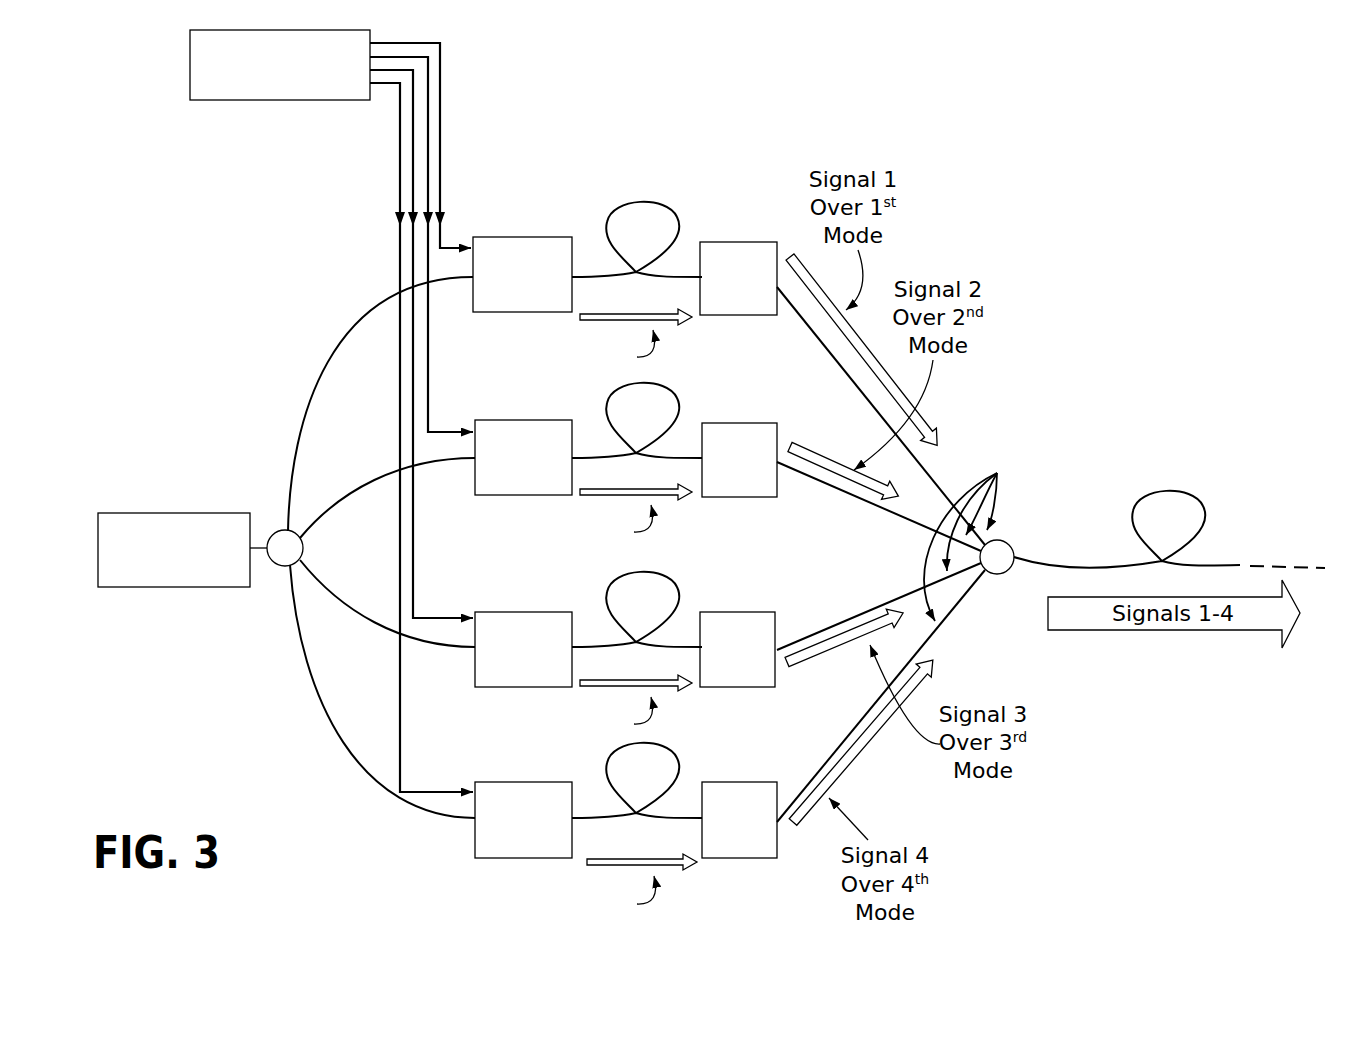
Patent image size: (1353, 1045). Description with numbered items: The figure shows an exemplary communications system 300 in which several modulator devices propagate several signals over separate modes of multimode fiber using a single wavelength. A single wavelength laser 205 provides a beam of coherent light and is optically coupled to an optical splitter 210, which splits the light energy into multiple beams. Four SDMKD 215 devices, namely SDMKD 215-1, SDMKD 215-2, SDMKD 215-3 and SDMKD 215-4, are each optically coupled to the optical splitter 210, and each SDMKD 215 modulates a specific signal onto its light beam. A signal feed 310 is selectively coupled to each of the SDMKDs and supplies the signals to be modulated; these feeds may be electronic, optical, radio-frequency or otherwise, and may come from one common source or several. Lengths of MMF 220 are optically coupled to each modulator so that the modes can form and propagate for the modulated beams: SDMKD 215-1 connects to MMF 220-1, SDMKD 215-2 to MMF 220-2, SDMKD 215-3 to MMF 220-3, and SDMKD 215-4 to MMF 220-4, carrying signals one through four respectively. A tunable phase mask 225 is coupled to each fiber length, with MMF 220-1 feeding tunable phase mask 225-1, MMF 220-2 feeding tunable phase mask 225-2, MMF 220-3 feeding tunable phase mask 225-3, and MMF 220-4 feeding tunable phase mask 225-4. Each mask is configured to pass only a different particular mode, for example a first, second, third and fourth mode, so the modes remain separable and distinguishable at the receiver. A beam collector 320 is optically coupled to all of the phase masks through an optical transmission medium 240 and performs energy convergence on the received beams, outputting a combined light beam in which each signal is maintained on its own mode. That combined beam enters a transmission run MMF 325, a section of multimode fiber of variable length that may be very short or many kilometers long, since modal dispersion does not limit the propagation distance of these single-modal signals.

The communications system 300 is at (1166, 136).
The signal feed 310 is at (331, 411).
The single wavelength laser 205 is at (175, 508).
The optical splitter 210 is at (276, 572).
The SDMKD 215 is at (526, 233).
The first SDMKD 215-1 is at (522, 274).
The second SDMKD 215-2 is at (523, 457).
The third SDMKD 215-3 is at (523, 649).
The fourth SDMKD 215-4 is at (523, 820).
The MMF 220 is at (660, 196).
The first MMF 220-1 is at (625, 285).
The second MMF 220-2 is at (623, 463).
The third MMF 220-3 is at (623, 653).
The fourth MMF 220-4 is at (624, 829).
The tunable phase mask 225 is at (742, 236).
The first tunable phase mask 225-1 is at (738, 278).
The second tunable phase mask 225-2 is at (739, 460).
The third tunable phase mask 225-3 is at (737, 649).
The fourth tunable phase mask 225-4 is at (739, 820).
The optical transmission medium 240 is at (997, 473).
The beam collector 320 is at (1019, 539).
The transmission run MMF 325 is at (1196, 490).